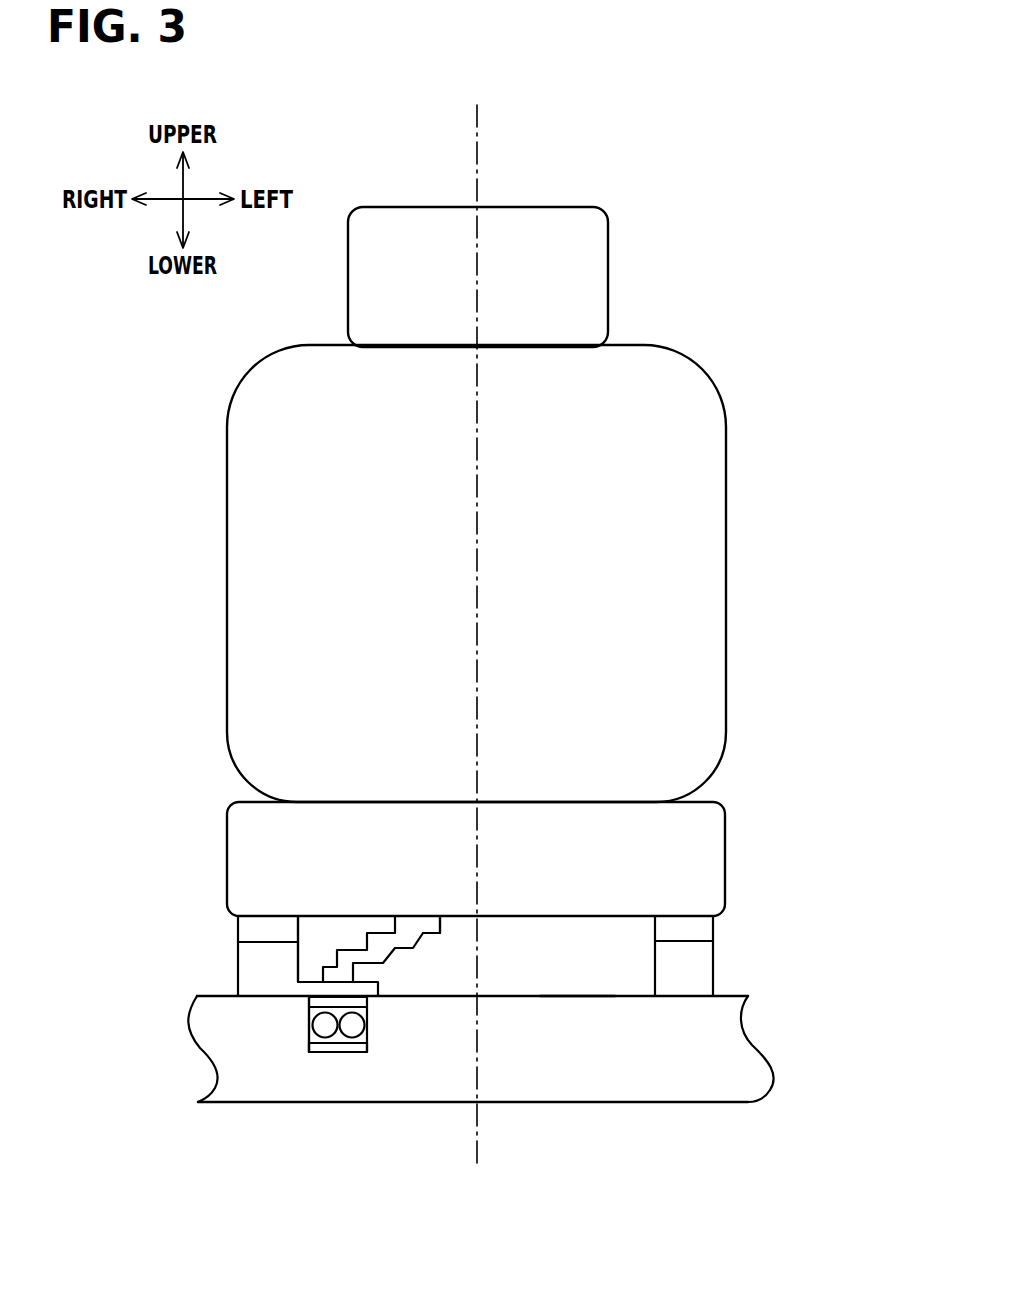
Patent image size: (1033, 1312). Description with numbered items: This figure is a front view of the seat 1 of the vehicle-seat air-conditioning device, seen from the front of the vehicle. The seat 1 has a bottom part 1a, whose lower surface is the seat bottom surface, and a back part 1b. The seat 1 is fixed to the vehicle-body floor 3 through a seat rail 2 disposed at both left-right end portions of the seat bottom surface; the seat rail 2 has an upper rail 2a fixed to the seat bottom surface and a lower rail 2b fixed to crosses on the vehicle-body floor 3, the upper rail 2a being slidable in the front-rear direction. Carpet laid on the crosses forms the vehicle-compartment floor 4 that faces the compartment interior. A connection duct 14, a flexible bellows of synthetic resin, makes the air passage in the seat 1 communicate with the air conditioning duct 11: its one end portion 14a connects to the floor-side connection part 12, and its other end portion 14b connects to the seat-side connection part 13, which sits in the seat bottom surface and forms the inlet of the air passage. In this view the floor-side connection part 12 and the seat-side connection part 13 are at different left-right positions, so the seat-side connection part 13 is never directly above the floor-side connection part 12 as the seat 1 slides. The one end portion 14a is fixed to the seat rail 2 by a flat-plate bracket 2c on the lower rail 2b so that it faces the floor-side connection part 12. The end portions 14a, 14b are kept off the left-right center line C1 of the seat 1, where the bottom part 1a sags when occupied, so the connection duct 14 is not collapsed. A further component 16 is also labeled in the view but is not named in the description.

The seat 1 is at (542, 561).
The bottom part 1a is at (725, 857).
The back part 1b is at (726, 610).
The seat rail 2 is at (387, 971).
The upper rail 2a is at (252, 928).
The lower rail 2b is at (260, 973).
The bracket 2c is at (335, 990).
The vehicle-body floor 3 is at (627, 1102).
The vehicle-compartment floor 4 is at (558, 996).
The air conditioning duct 11 is at (378, 1050).
The floor-side connection part 12 is at (368, 997).
The seat-side connection part 13 is at (440, 916).
The connection duct 14 is at (276, 1012).
The one end portion 14a is at (323, 982).
The other end portion 14b is at (440, 916).
The bearing housing 16 is at (308, 1027).
The center line C1 is at (478, 122).